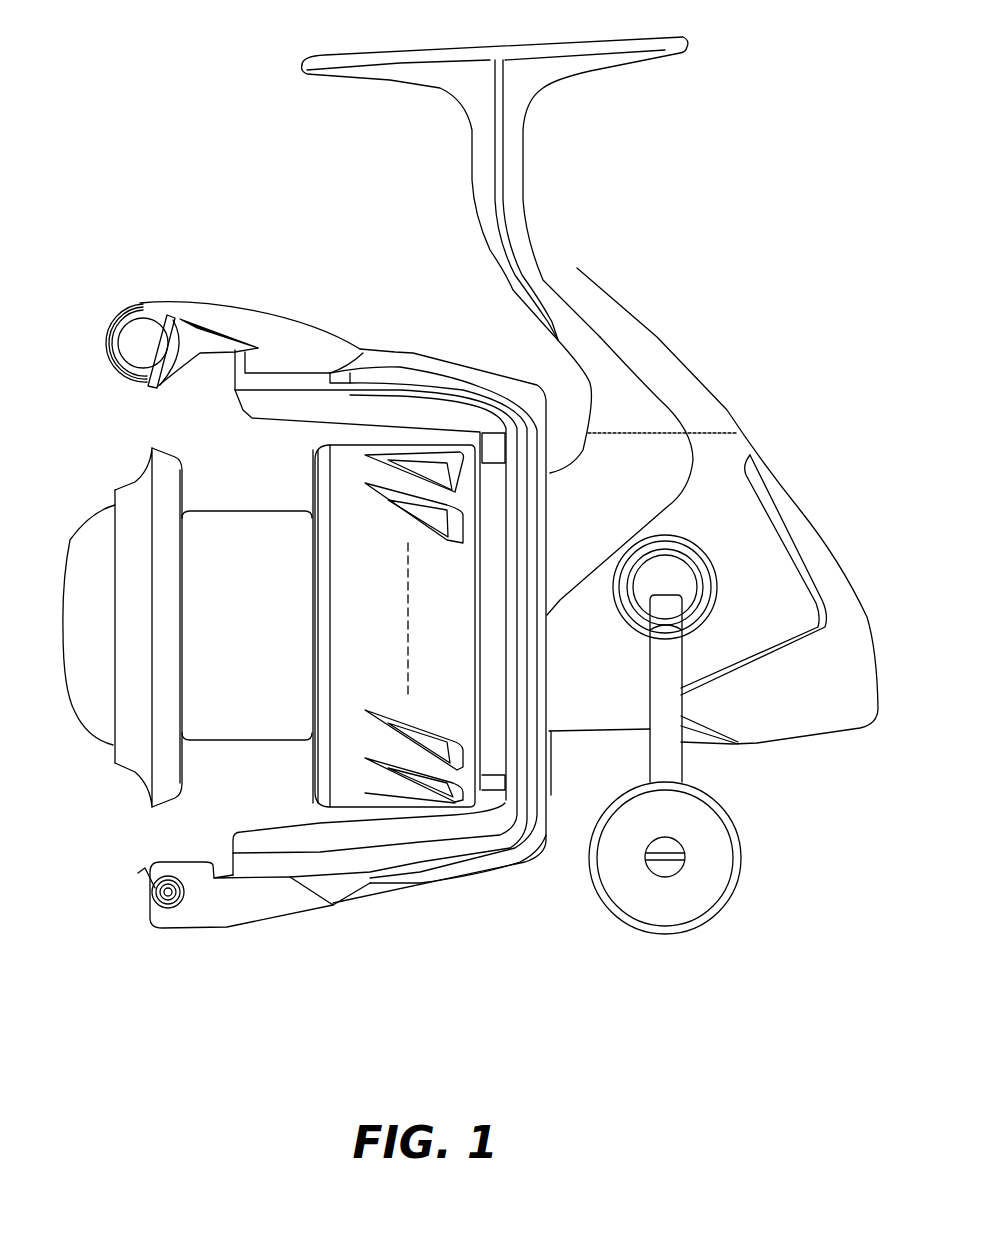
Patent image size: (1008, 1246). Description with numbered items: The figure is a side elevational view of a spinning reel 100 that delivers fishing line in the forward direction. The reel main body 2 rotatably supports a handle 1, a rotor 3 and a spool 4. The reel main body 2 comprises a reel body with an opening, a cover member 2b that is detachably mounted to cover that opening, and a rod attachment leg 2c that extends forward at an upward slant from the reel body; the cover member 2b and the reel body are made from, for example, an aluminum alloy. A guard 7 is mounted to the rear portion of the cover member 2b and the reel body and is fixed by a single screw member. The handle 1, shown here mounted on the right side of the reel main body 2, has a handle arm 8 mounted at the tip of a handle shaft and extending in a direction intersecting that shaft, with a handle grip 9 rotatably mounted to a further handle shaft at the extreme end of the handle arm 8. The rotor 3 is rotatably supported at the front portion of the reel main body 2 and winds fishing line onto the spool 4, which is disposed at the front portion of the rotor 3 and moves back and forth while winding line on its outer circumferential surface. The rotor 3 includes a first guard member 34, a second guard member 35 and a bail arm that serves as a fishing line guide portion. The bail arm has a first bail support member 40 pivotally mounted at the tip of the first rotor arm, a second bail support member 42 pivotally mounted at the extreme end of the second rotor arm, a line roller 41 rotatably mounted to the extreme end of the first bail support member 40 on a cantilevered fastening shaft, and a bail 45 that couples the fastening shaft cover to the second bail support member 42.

The spinning reel 100 is at (258, 172).
The handle 1 is at (681, 775).
The reel body 2 is at (655, 316).
The cover member 2b is at (653, 467).
The rod attachment leg 2c is at (578, 268).
The rotor 3 is at (395, 352).
The spool 4 is at (237, 500).
The guard 7 is at (797, 503).
The handle arm 8 is at (662, 745).
The handle grip 9 is at (640, 893).
The first guard member 34 is at (118, 396).
The second guard member 35 is at (416, 372).
The first bail support member 40 is at (257, 308).
The line roller 41 is at (130, 302).
The second bail support member 42 is at (230, 912).
The bail 45 is at (155, 382).